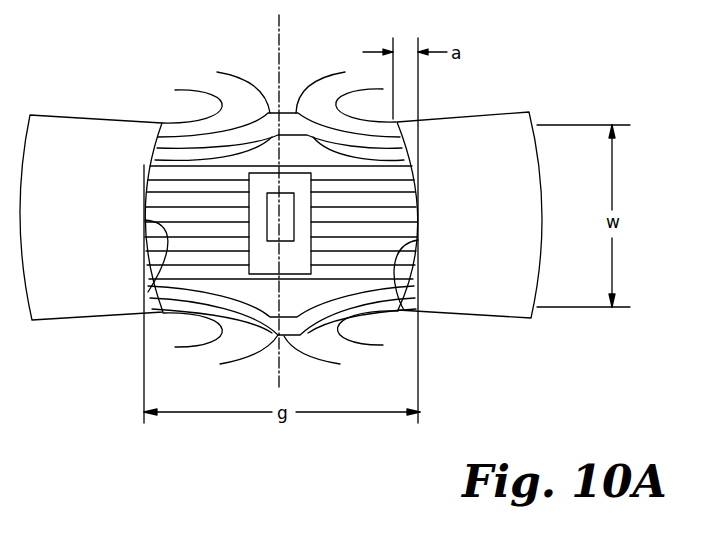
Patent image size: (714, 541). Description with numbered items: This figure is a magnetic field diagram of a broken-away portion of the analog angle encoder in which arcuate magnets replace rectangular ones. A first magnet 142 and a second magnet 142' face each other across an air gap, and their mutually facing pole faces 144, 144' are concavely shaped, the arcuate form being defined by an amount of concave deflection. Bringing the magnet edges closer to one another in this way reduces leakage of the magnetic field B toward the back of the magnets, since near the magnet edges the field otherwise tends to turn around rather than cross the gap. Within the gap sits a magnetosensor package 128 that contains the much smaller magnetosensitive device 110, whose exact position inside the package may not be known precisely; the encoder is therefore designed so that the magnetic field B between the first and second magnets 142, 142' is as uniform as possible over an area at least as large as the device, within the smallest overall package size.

The first magnet 142 is at (91, 175).
The second magnet 142' is at (477, 180).
The magnetosensitive device 110 is at (272, 192).
The magnetosensor package 128 is at (300, 275).
The first pole face 144 is at (115, 295).
The second pole face 144' is at (444, 301).
The magnetic field B is at (169, 207).